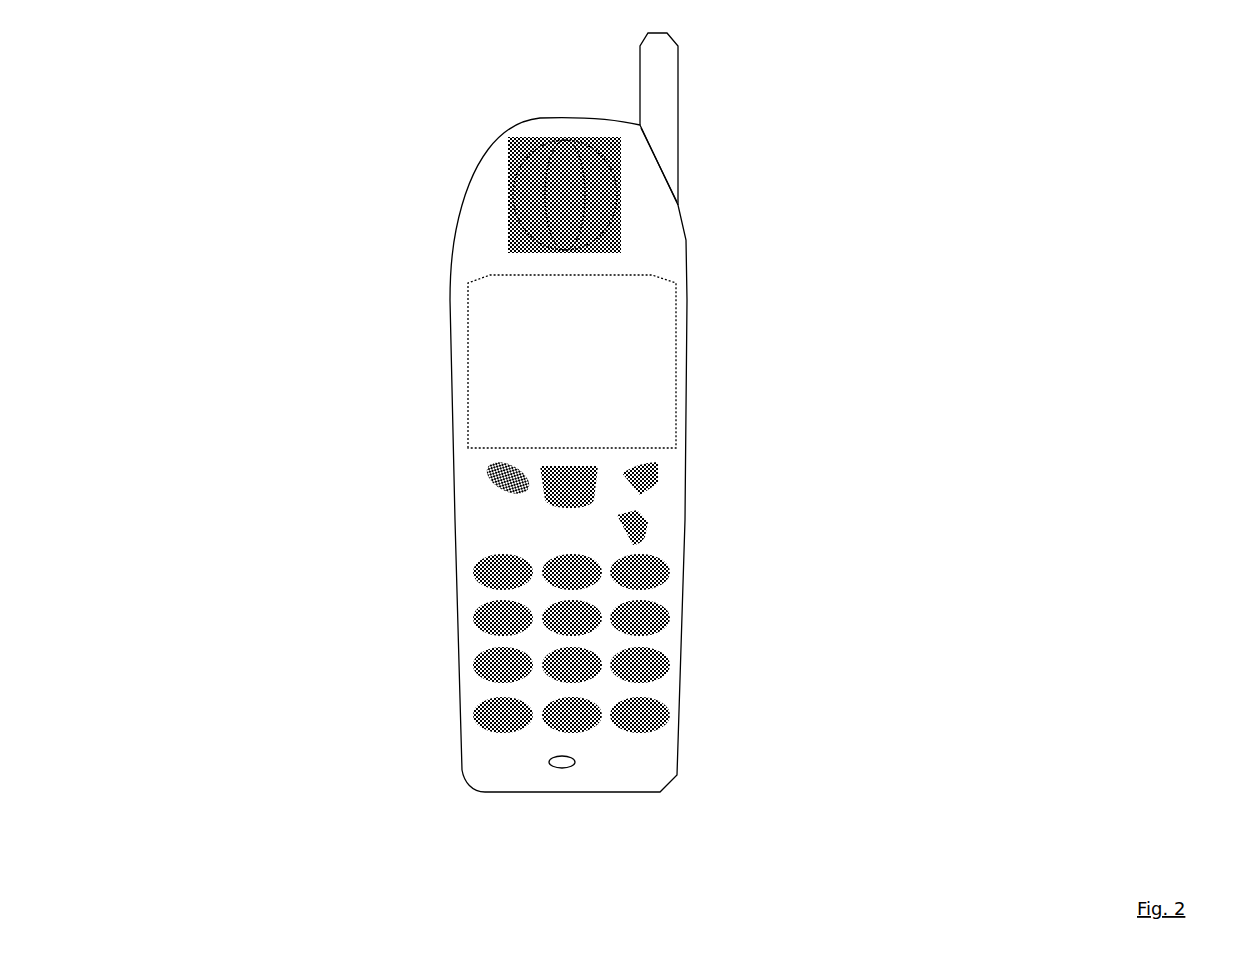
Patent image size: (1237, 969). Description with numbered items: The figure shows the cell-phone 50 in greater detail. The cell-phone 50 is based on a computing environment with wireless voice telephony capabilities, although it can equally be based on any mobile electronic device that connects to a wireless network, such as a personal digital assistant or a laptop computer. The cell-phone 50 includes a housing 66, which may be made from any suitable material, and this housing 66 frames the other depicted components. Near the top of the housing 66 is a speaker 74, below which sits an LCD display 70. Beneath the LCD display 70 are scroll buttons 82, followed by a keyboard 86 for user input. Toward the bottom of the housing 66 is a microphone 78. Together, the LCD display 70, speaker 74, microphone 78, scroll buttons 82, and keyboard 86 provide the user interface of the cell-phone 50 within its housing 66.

The cell-phone 50 is at (238, 813).
The housing 66 is at (446, 514).
The LCD display 70 is at (492, 369).
The speaker 74 is at (566, 128).
The microphone 78 is at (561, 772).
The scroll buttons 82 is at (668, 496).
The keyboard 86 is at (470, 692).